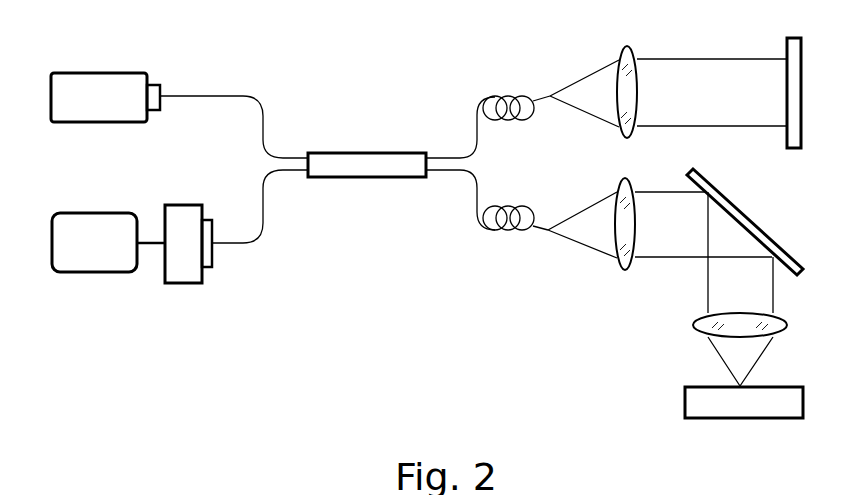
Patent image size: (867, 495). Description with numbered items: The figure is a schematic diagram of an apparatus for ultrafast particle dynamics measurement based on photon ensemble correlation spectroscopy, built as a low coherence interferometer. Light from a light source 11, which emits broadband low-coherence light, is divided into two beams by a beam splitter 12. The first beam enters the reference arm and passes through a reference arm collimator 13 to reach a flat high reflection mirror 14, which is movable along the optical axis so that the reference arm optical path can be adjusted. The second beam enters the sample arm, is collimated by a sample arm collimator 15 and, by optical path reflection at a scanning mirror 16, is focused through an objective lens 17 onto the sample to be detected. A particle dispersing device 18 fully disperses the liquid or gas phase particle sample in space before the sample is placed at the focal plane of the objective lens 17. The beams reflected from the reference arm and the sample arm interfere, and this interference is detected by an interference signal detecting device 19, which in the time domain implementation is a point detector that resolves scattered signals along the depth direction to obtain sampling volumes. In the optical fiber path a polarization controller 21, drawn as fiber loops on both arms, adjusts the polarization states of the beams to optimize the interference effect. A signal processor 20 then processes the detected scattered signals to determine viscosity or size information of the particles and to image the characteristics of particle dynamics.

The light source 11 is at (105, 97).
The beam splitter 12 is at (367, 149).
The reference arm collimator 13 is at (595, 73).
The flat high reflection mirror 14 is at (796, 78).
The sample arm collimator 15 is at (595, 241).
The scanning mirror 16 is at (745, 222).
The objective lens 17 is at (758, 349).
The particle dispersing device 18 is at (744, 403).
The interference signal detecting device 19 is at (188, 244).
The signal processor 20 is at (94, 242).
The polarization controller 21 is at (509, 136).